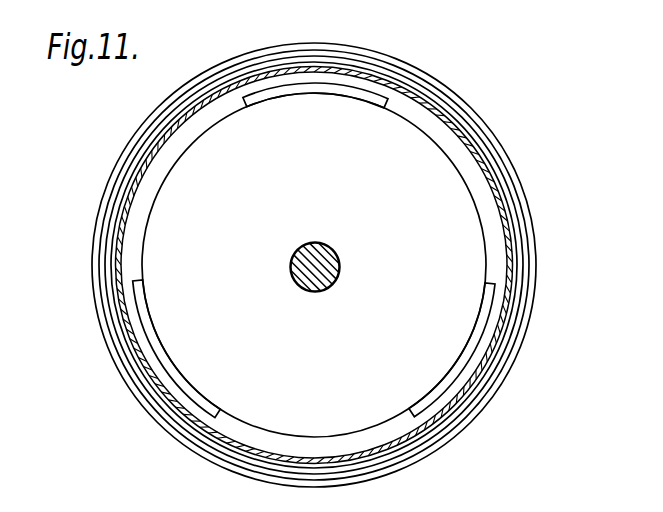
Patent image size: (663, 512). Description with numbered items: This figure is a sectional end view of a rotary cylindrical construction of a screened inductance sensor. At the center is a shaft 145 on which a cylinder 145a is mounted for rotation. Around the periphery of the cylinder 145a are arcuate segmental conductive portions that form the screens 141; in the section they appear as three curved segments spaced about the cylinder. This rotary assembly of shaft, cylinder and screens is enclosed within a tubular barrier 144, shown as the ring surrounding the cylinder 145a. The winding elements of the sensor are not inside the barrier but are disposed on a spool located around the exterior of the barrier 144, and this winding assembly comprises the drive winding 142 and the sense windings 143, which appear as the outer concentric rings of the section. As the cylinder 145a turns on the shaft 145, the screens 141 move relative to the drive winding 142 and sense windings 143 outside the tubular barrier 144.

The screens 141 is at (480, 315).
The drive winding 142 is at (500, 147).
The sense windings 143 is at (423, 90).
The tubular barrier 144 is at (467, 387).
The shaft 145 is at (333, 281).
The cylinder 145a is at (285, 356).